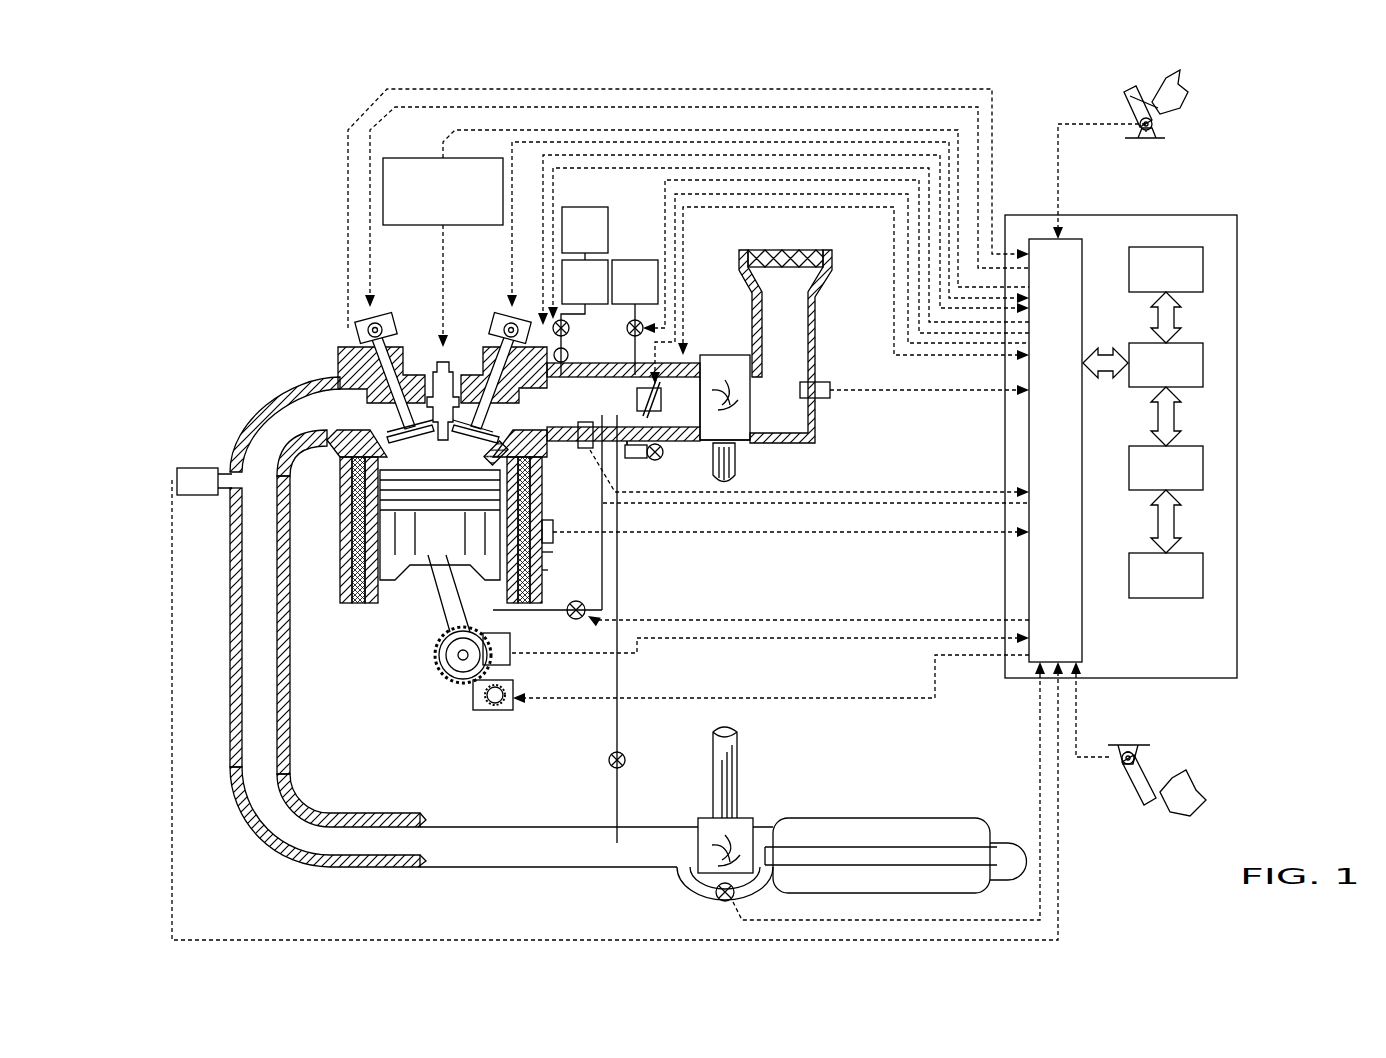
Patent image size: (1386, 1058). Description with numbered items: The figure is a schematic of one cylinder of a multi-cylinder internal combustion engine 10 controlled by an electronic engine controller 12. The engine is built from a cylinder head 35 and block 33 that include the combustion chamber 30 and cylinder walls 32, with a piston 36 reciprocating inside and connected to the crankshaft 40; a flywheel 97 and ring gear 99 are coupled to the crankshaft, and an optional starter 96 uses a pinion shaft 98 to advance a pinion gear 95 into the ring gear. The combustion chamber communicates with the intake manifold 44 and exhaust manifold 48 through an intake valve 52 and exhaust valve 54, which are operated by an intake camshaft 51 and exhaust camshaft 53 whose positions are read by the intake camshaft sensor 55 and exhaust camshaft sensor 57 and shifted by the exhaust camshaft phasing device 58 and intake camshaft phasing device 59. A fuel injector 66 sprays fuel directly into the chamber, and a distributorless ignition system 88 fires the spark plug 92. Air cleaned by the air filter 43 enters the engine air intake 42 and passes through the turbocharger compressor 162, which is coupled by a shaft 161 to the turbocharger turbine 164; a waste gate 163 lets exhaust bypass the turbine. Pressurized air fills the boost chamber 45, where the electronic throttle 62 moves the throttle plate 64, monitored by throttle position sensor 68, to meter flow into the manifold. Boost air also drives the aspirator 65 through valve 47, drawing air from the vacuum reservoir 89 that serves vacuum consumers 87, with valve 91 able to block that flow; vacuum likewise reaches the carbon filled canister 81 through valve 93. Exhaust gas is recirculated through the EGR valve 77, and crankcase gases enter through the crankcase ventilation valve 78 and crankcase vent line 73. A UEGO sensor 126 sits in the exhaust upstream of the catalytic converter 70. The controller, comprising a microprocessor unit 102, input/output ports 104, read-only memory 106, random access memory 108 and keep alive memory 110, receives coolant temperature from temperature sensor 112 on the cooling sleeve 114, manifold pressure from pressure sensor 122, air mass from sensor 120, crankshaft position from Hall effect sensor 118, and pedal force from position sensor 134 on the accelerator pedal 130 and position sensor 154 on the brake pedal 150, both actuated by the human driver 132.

The internal combustion engine 10 is at (262, 290).
The electronic engine controller 12 is at (1237, 220).
The combustion chamber 30 is at (350, 560).
The cylinder walls 32 is at (380, 598).
The block 33 is at (330, 500).
The cylinder head 35 is at (328, 340).
The piston 36 is at (420, 585).
The crankshaft 40 is at (455, 672).
The engine air intake 42 is at (838, 258).
The air filter 43 is at (802, 268).
The intake manifold 44 is at (623, 402).
The boost chamber 45 is at (683, 402).
The valve 47 is at (658, 460).
The exhaust manifold 48 is at (464, 622).
The intake camshaft 51 is at (500, 320).
The intake valve 52 is at (495, 420).
The exhaust camshaft 53 is at (378, 322).
The exhaust valve 54 is at (372, 425).
The intake camshaft sensor 55 is at (522, 330).
The exhaust camshaft sensor 57 is at (357, 330).
The exhaust camshaft phasing device 58 is at (392, 330).
The intake camshaft phasing device 59 is at (505, 337).
The electronic throttle 62 is at (637, 398).
The throttle plate 64 is at (640, 415).
The aspirator 65 is at (636, 458).
The fuel injector 66 is at (490, 455).
The throttle position sensor 68 is at (662, 386).
The catalytic converter 70 is at (820, 818).
The crankcase vent line 73 is at (556, 556).
The exhaust gas recirculation valve 77 is at (627, 326).
The crankcase ventilation valve 78 is at (572, 601).
The carbon filled canister 81 is at (635, 317).
The vacuum consumers 87 is at (585, 230).
The distributorless ignition system 88 is at (400, 158).
The vacuum reservoir 89 is at (584, 314).
The valve 91 is at (568, 334).
The spark plug 92 is at (447, 358).
The valve 93 is at (609, 757).
The pinion gear 95 is at (617, 732).
The starter 96 is at (512, 705).
The flywheel 97 is at (437, 660).
The pinion shaft 98 is at (485, 705).
The ring gear 99 is at (458, 685).
The microprocessor unit 102 is at (1203, 362).
The input/output ports 104 is at (1082, 262).
The read-only memory 106 is at (1203, 265).
The random access memory 108 is at (1203, 466).
The keep alive memory 110 is at (1203, 572).
The temperature sensor 112 is at (553, 528).
The cooling sleeve 114 is at (548, 572).
The Hall effect sensor 118 is at (510, 645).
The air mass sensor 120 is at (830, 386).
The pressure sensor 122 is at (585, 450).
The Universal Exhaust Gas Oxygen sensor 126 is at (177, 472).
The accelerator pedal 130 is at (1128, 97).
The human driver 132 is at (1182, 86).
The position sensor 134 is at (1160, 126).
The brake pedal 150 is at (1146, 802).
The position sensor 154 is at (1114, 749).
The shaft 161 is at (737, 462).
The turbocharger compressor 162 is at (752, 440).
The waste gate 163 is at (716, 897).
The turbocharger turbine 164 is at (700, 818).